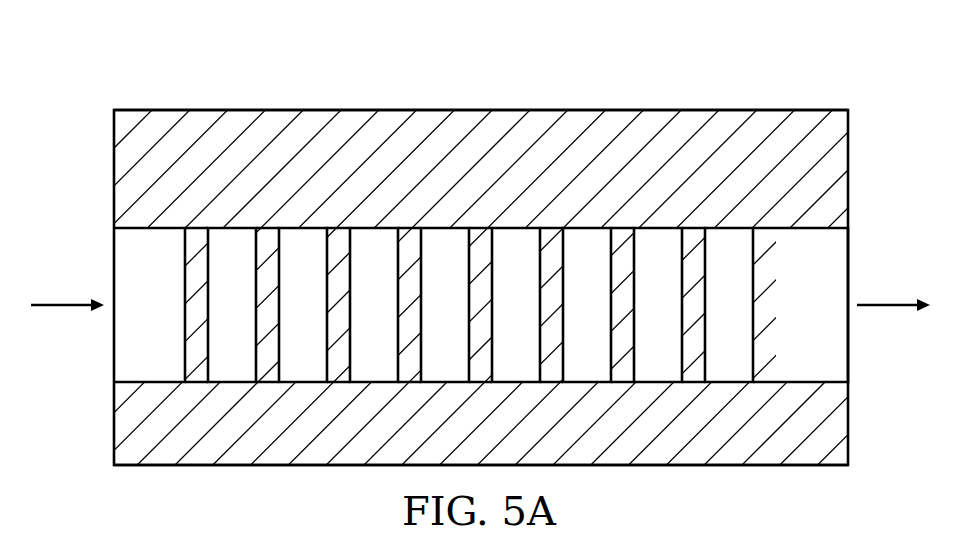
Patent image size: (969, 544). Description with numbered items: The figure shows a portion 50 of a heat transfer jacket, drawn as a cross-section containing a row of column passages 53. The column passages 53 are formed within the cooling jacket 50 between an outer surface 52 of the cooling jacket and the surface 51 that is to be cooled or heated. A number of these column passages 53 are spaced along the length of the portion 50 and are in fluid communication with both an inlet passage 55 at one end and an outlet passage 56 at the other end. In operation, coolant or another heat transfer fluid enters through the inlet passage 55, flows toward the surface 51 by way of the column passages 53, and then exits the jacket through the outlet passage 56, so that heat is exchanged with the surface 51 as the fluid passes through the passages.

The portion of a heat transfer jacket 50 is at (621, 80).
The surface to be cooled or heated 51 is at (687, 465).
The outer surface of the cooling jacket 52 is at (437, 110).
The column passages 53 is at (367, 240).
The inlet passage 55 is at (60, 304).
The outlet passage 56 is at (888, 304).